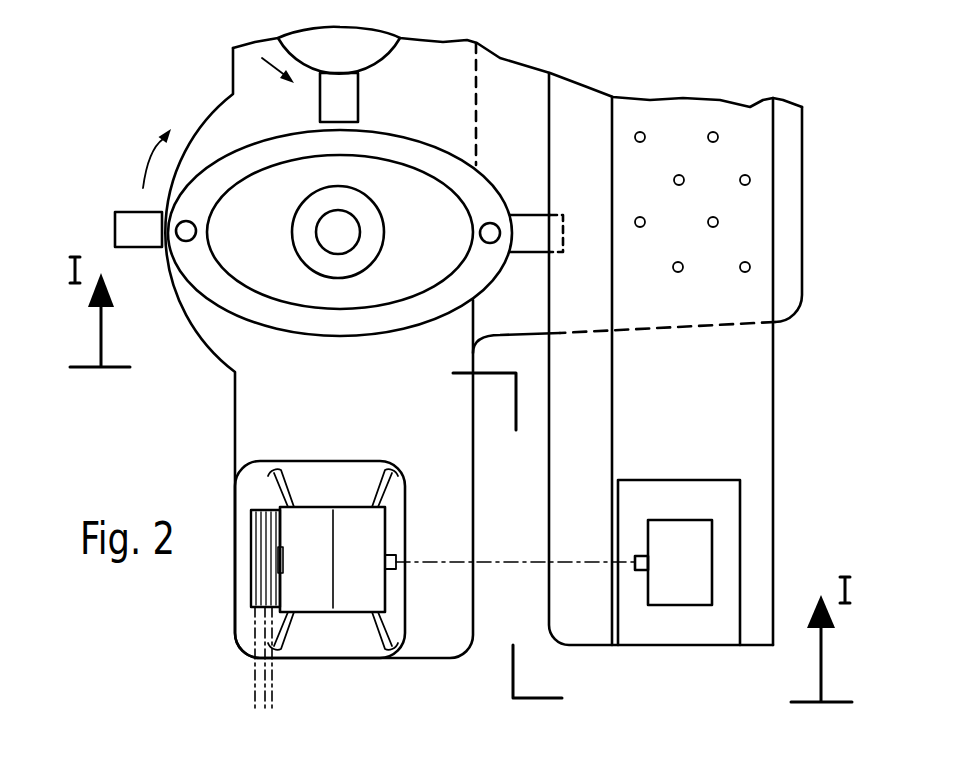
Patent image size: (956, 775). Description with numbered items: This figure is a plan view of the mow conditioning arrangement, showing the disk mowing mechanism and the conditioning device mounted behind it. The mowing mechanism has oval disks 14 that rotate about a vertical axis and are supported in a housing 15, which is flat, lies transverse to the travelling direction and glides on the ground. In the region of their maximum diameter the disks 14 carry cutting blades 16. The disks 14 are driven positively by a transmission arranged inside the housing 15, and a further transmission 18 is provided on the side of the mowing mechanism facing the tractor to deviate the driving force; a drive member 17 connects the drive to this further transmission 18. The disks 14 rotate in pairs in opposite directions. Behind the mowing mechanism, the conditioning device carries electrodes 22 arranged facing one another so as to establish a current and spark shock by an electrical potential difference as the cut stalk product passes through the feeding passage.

The oval disks 14 is at (252, 160).
The housing 15 is at (440, 622).
The cutting blades 16 is at (132, 222).
The drive belt pulley 17 is at (253, 677).
The further transmission 18 is at (348, 585).
The electrodes 22 is at (745, 175).